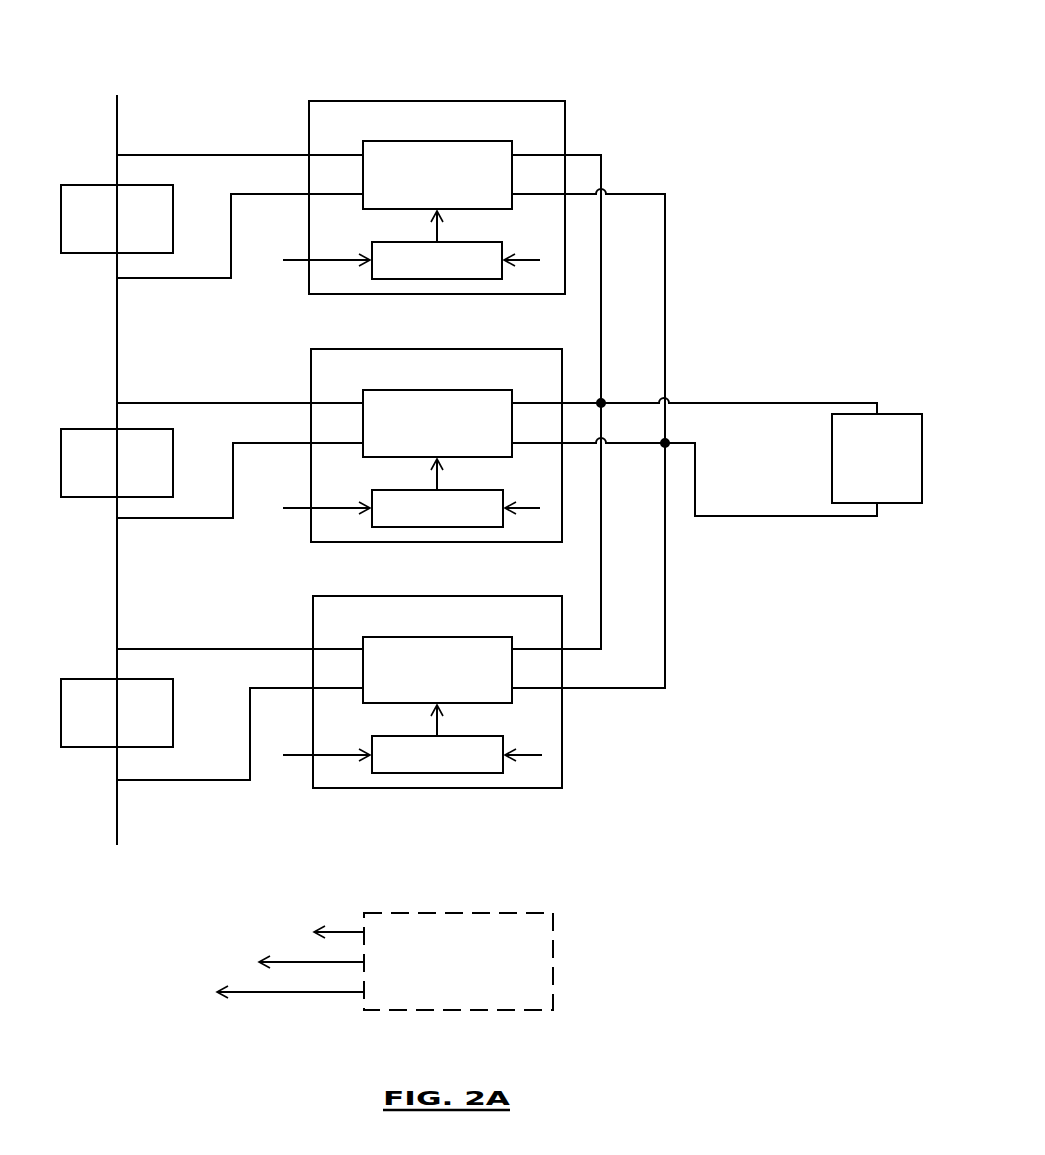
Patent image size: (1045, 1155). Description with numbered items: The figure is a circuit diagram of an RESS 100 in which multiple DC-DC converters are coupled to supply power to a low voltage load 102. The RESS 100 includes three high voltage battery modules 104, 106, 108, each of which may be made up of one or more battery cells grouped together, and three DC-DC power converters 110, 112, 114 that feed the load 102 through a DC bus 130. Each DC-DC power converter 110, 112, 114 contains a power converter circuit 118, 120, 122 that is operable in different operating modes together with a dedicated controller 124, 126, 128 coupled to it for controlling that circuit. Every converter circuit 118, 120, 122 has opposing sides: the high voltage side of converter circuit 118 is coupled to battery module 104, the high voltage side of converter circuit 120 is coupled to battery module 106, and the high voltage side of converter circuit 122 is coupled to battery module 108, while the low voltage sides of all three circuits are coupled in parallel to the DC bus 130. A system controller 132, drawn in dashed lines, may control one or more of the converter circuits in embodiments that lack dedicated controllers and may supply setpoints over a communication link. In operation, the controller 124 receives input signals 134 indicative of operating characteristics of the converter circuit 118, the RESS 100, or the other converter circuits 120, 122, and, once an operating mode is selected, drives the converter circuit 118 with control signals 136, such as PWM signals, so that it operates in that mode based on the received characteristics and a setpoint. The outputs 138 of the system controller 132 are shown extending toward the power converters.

The RESS 100 is at (386, 25).
The low voltage load 102 is at (890, 412).
The high voltage battery module 104 is at (90, 185).
The high voltage battery module 106 is at (93, 428).
The high voltage battery module 108 is at (93, 679).
The DC-DC power converter 110 is at (368, 101).
The DC-DC power converter 112 is at (370, 349).
The DC-DC power converter 114 is at (377, 596).
The power converter circuit 118 is at (350, 203).
The power converter circuit 120 is at (362, 450).
The power converter circuit 122 is at (362, 695).
The controller 124 is at (447, 279).
The controller 126 is at (472, 527).
The controller 128 is at (472, 773).
The DC bus 130 is at (710, 400).
The system controller 132 is at (482, 912).
The input signals 134 is at (528, 246).
The control signals 136 is at (461, 226).
The command signal 138 is at (342, 930).